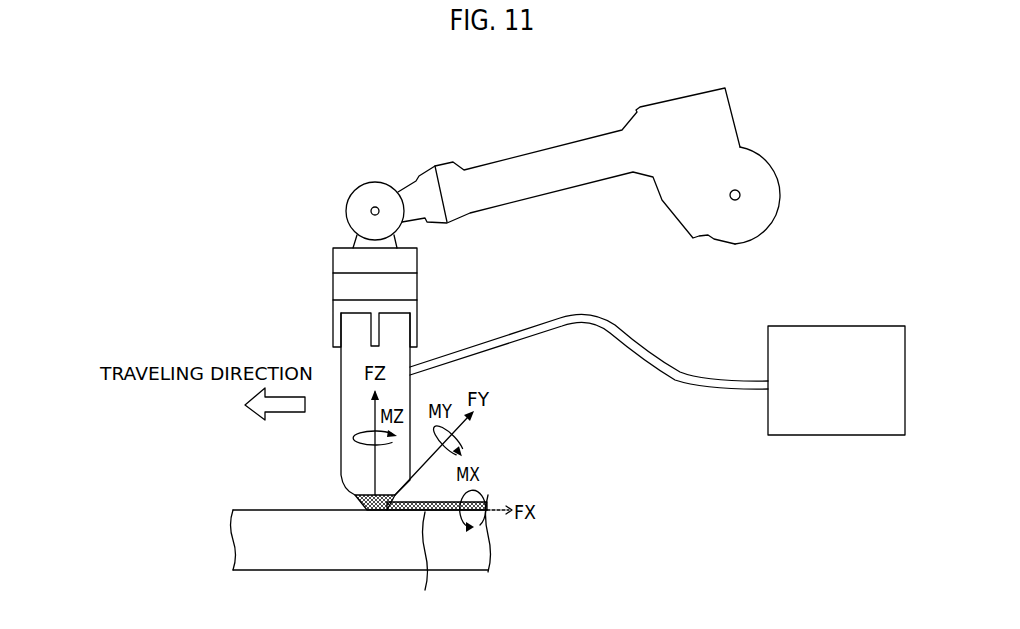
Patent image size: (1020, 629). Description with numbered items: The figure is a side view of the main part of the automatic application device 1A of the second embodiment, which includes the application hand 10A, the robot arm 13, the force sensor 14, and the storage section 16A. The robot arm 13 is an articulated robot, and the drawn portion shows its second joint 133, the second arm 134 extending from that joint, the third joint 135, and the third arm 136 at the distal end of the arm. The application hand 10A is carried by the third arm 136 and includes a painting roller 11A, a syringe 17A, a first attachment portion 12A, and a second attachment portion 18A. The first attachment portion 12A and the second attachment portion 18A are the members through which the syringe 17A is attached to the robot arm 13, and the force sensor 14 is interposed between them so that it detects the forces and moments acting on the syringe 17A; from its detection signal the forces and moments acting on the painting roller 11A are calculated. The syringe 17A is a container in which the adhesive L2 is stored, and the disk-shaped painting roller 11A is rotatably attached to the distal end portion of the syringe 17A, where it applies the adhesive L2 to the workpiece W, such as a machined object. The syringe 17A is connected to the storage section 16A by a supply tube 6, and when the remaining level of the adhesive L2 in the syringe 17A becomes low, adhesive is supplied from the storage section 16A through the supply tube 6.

The automatic application device 1A is at (848, 95).
The robot arm 13 is at (663, 95).
The second joint 133 is at (785, 194).
The second arm 134 is at (565, 190).
The third joint 135 is at (362, 188).
The third arm 136 is at (353, 241).
The application hand 10A is at (520, 402).
The force sensor 14 is at (418, 288).
The second attachment portion 18A is at (334, 261).
The first attachment portion 12A is at (334, 308).
The syringe 17A is at (341, 428).
The painting roller 11A is at (352, 488).
The supply tube 6 is at (628, 322).
The storage section 16A is at (852, 325).
The workpiece W is at (275, 571).
The adhesive L2 is at (425, 566).